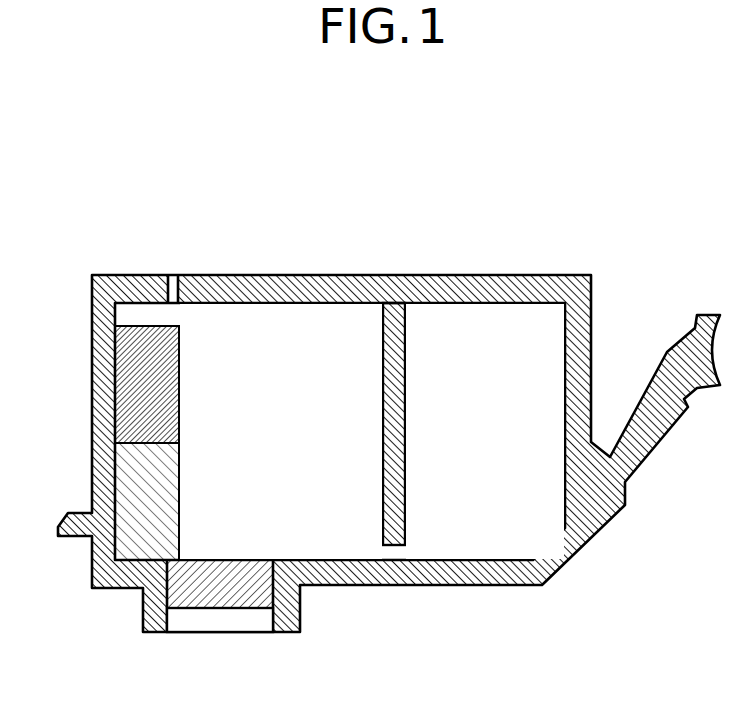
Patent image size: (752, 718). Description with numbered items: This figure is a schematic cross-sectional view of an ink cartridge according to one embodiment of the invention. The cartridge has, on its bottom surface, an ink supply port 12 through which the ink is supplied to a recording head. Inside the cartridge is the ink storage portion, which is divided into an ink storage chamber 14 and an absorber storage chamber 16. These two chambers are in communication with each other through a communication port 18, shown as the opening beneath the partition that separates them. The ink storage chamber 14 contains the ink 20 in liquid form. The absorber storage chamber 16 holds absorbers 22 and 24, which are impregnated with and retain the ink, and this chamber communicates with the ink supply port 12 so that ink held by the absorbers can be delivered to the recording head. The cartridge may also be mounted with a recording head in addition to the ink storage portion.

The ink supply port 12 is at (225, 622).
The ink storage chamber 14 is at (532, 310).
The absorber storage chamber 16 is at (233, 318).
The communication port 18 is at (393, 552).
The ink 20 is at (512, 528).
The absorber 22 is at (135, 480).
The absorber 24 is at (162, 385).